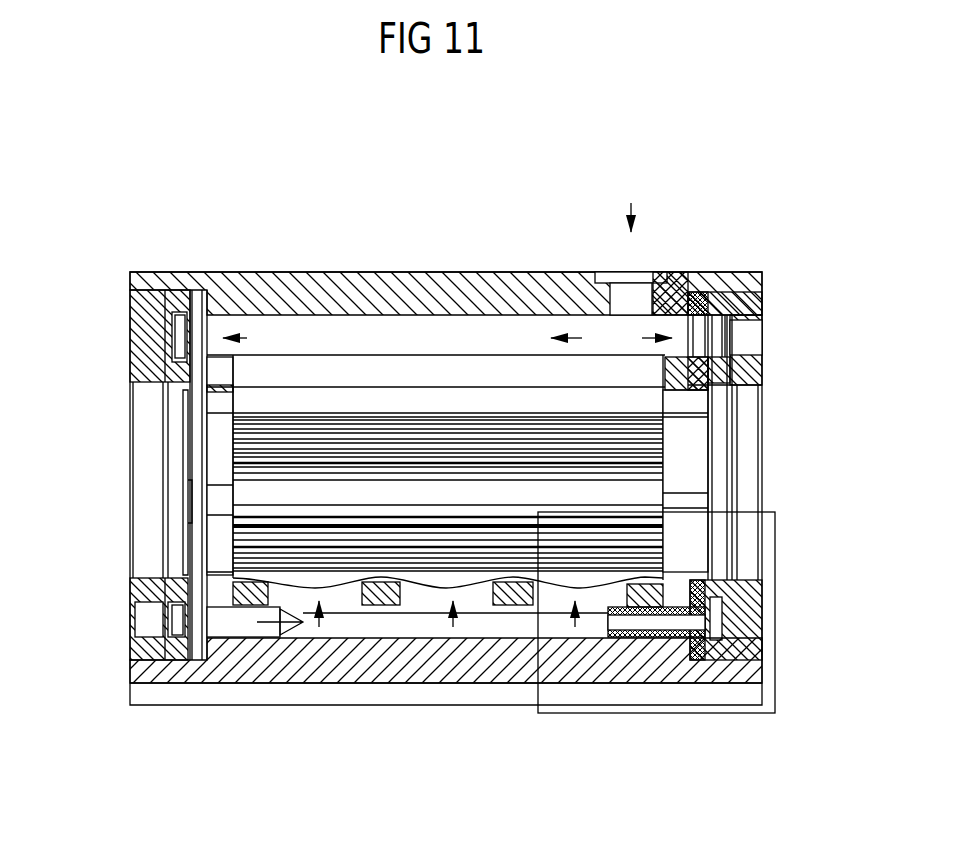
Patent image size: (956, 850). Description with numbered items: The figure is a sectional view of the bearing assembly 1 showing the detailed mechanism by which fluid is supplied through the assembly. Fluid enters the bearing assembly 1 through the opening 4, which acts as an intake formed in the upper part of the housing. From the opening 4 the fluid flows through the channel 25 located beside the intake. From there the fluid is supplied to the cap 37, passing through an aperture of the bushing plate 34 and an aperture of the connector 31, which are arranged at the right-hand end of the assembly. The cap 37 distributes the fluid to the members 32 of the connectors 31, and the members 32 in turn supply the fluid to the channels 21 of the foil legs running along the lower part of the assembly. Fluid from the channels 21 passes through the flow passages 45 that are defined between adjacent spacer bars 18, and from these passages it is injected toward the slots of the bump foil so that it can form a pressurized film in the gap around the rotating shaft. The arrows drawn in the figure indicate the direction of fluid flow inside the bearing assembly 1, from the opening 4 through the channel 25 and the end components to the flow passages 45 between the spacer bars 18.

The bearing assembly 1 is at (146, 205).
The opening 4 is at (616, 283).
The spacer bar 18 is at (241, 596).
The channel 21 is at (478, 639).
The channel 25 is at (682, 308).
The connector 31 is at (763, 378).
The member 32 is at (663, 622).
The bushing plate 34 is at (765, 305).
The cap 37 is at (720, 560).
The flow passage 45 is at (299, 597).